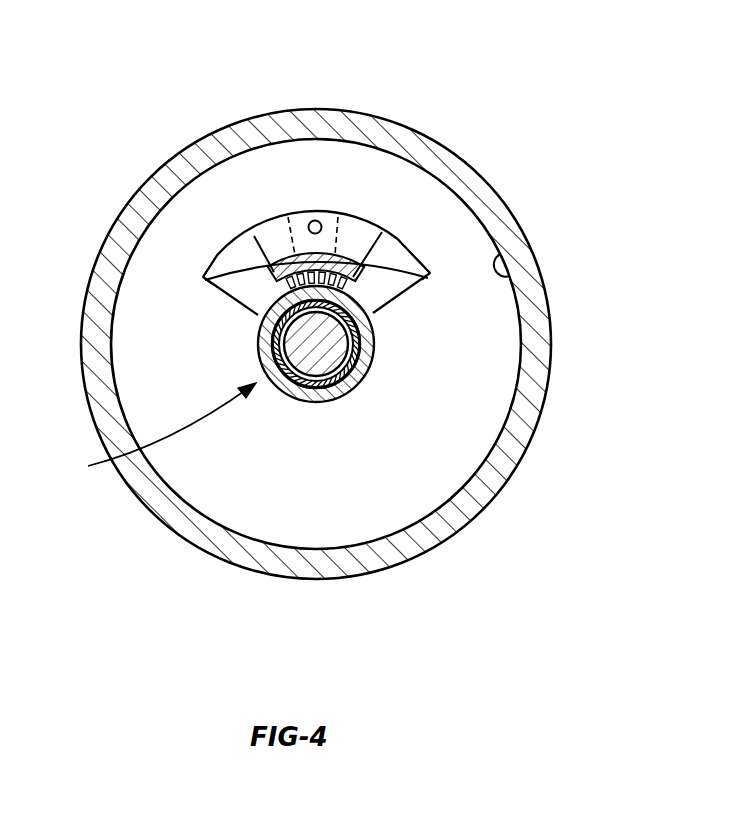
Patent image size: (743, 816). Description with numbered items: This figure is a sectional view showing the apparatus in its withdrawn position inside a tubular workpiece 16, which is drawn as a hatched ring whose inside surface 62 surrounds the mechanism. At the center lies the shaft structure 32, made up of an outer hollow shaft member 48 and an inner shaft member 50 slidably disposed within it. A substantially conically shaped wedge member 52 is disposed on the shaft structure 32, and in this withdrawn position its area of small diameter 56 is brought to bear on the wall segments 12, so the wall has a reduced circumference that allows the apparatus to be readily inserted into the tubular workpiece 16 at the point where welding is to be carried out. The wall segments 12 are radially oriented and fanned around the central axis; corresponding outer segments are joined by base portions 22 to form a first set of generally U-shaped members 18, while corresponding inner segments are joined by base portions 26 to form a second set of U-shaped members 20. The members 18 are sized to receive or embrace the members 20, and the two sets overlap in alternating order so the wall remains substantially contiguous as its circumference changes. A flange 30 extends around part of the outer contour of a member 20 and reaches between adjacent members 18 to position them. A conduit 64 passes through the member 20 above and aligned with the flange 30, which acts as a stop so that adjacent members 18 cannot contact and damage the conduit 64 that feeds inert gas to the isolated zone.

The wall segment 12 is at (363, 233).
The tubular workpiece 16 is at (500, 482).
The U-shaped member 18 is at (227, 246).
The U-shaped member 20 is at (319, 220).
The base portion 22 is at (258, 318).
The base portion 26 is at (227, 288).
The flange 30 is at (403, 262).
The shaft structure 32 is at (150, 434).
The outer hollow shaft member 48 is at (324, 385).
The inner shaft member 50 is at (352, 382).
The wedge member 52 is at (290, 388).
The area of small diameter 56 is at (336, 360).
The inside surface 62 is at (538, 283).
The conduit 64 is at (310, 218).